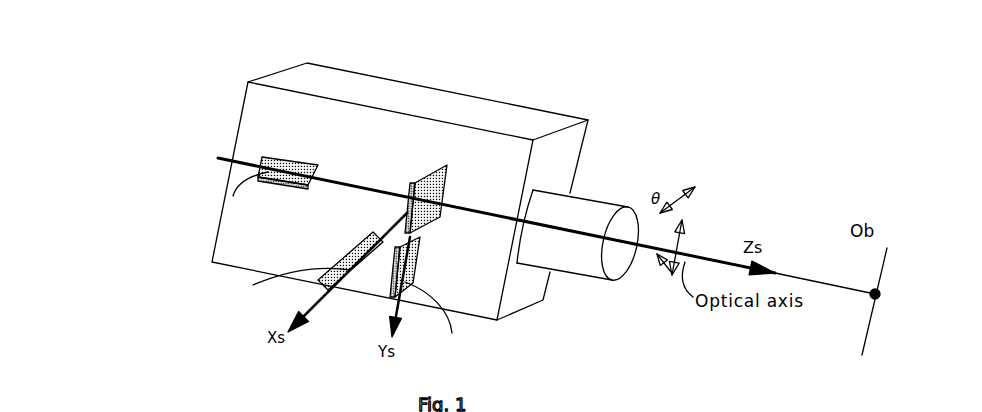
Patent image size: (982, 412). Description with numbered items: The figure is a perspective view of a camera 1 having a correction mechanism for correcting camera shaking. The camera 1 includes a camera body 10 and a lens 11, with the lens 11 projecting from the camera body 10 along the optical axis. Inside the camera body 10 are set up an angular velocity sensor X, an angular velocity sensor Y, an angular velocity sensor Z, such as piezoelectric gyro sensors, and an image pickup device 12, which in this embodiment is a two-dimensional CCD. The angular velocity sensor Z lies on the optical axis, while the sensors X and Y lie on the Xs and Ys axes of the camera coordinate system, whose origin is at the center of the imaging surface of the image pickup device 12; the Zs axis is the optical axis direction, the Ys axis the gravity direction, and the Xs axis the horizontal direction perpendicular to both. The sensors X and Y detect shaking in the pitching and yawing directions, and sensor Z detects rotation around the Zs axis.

The camera 1 is at (598, 57).
The camera body 10 is at (568, 103).
The lens 11 is at (603, 220).
The image pickup device 12 is at (420, 180).